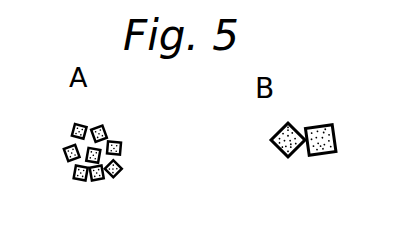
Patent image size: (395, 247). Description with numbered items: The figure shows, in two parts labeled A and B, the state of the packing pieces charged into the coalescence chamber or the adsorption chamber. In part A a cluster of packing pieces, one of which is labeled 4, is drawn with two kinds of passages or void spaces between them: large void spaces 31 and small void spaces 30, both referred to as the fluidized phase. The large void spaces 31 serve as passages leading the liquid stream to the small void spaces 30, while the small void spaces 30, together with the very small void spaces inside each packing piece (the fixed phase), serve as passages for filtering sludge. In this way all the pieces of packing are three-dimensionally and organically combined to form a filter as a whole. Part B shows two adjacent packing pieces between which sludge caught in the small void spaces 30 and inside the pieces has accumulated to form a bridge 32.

The small void spaces 30 is at (113, 141).
The large void spaces 31 is at (71, 142).
The particle 4 is at (77, 181).
The bridge 32 is at (301, 131).